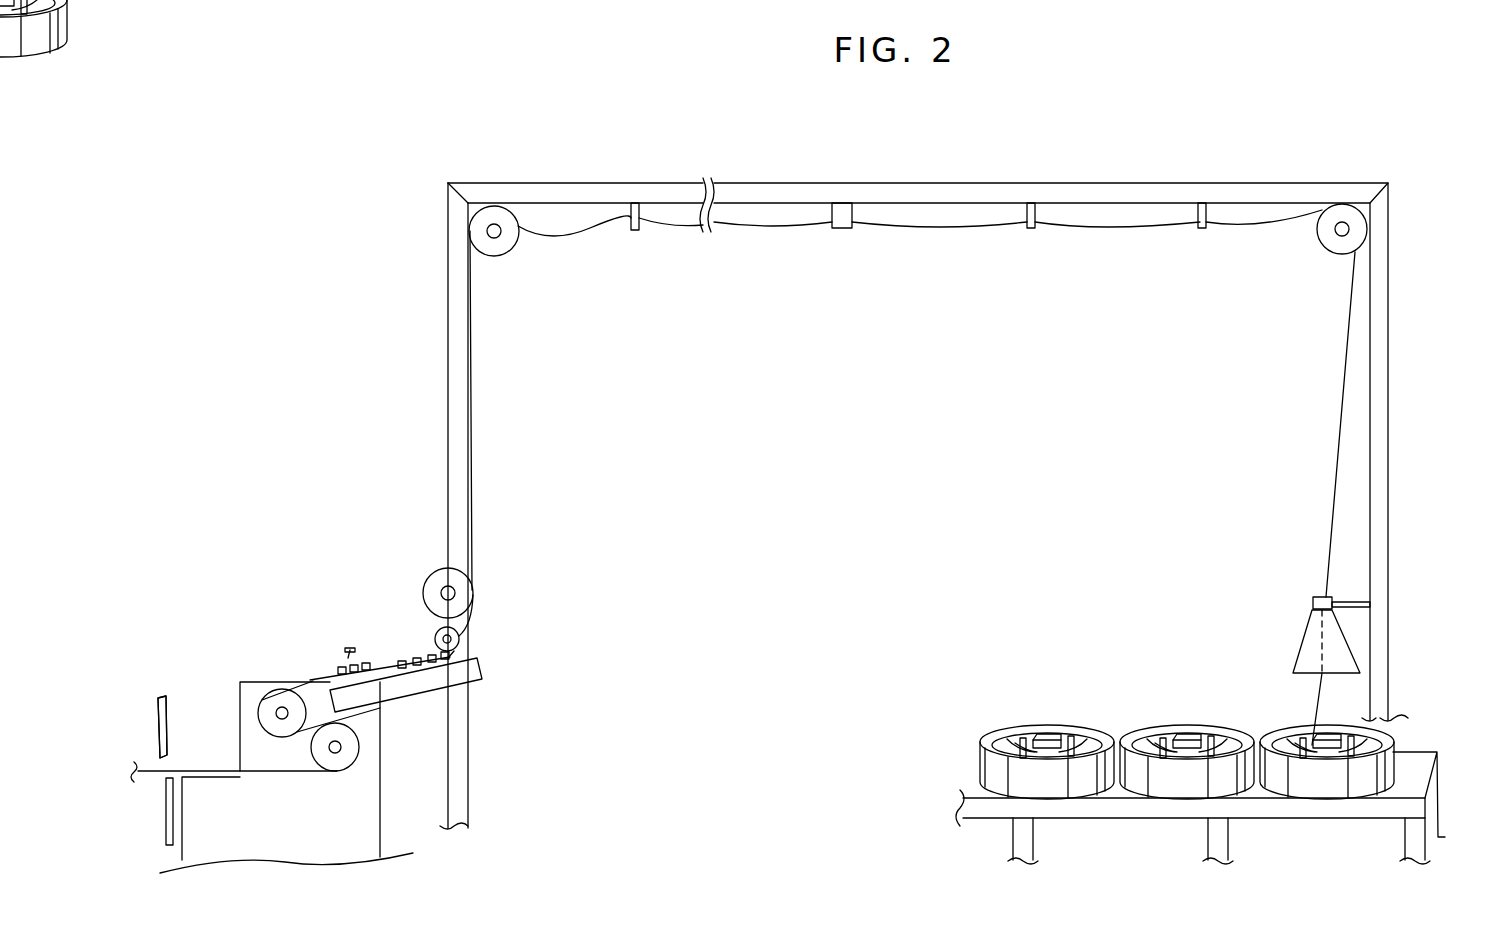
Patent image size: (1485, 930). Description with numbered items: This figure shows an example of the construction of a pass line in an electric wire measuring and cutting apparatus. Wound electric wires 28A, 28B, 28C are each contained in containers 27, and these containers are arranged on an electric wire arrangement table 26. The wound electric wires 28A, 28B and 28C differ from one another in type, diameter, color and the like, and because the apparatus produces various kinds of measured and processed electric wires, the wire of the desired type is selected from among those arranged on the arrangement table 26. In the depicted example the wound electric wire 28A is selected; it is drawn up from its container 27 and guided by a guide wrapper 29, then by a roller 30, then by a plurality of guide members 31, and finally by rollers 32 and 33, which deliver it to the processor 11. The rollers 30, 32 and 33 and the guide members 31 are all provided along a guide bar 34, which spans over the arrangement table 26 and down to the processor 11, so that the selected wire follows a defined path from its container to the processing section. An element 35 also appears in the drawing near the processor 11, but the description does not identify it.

The processor 11 is at (300, 662).
The electric wire arrangement table 26 is at (1412, 782).
The container 27 is at (1040, 722).
The wound electric wire 28A is at (1335, 733).
The wound electric wire 28B is at (1225, 735).
The wound electric wire 28C is at (1050, 735).
The guide wrapper 29 is at (1350, 640).
The roller 30 is at (1330, 245).
The guide member 31 is at (636, 232).
The roller 32 is at (500, 248).
The roller 33 is at (470, 593).
The guide bar 34 is at (778, 190).
The guide plate 35 is at (165, 737).